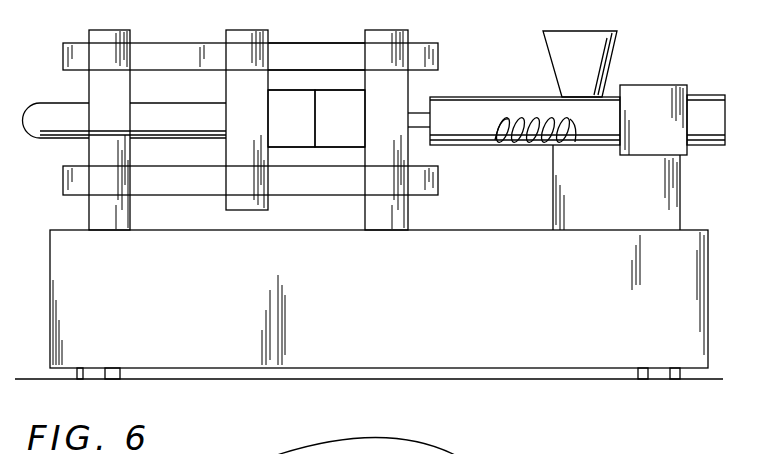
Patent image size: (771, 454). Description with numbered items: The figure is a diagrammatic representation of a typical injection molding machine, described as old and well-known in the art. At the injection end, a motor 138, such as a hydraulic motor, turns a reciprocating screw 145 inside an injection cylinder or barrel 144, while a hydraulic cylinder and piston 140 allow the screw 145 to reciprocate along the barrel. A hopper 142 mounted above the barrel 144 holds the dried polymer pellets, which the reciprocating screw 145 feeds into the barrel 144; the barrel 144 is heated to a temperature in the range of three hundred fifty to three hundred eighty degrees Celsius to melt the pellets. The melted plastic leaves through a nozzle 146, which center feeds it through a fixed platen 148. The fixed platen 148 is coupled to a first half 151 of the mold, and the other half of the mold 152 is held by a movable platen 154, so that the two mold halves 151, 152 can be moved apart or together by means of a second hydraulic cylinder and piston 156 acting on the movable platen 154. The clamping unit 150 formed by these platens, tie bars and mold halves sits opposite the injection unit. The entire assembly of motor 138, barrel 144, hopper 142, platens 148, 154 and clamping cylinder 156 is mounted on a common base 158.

The motor 138 is at (703, 107).
The hydraulic cylinder and piston 140 is at (653, 137).
The hopper 142 is at (583, 55).
The barrel 144 is at (463, 108).
The reciprocating screw 145 is at (527, 143).
The nozzle 146 is at (420, 120).
The fixed platen 148 is at (385, 63).
The clamping unit 150 is at (314, 31).
The first half of the mold 151 is at (352, 127).
The other half of the mold 152 is at (306, 127).
The movable platen 154 is at (238, 75).
The hydraulic cylinder and piston 156 is at (205, 118).
The base 158 is at (378, 301).